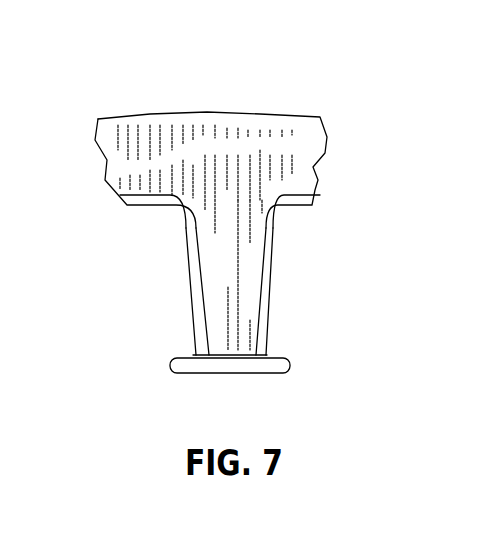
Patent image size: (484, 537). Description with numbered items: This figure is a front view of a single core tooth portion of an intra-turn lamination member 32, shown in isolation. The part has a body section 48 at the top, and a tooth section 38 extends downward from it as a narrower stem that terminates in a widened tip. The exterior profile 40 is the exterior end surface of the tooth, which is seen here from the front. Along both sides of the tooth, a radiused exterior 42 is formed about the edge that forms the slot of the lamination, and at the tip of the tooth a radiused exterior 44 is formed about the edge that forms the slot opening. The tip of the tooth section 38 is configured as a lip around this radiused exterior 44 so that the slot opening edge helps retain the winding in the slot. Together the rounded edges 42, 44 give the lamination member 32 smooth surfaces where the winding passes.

The intra-turn lamination member 32 is at (124, 62).
The tooth section 38 is at (174, 385).
The exterior profile 40 is at (218, 253).
The radiused exterior 42 is at (190, 268).
The radiused exterior 44 is at (172, 361).
The body section 48 is at (222, 133).